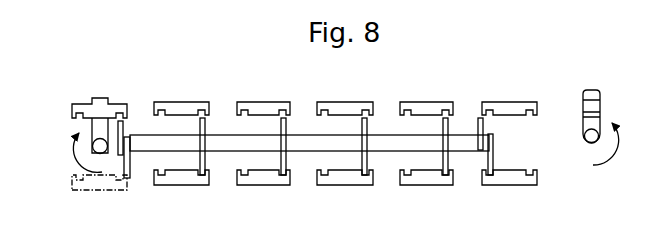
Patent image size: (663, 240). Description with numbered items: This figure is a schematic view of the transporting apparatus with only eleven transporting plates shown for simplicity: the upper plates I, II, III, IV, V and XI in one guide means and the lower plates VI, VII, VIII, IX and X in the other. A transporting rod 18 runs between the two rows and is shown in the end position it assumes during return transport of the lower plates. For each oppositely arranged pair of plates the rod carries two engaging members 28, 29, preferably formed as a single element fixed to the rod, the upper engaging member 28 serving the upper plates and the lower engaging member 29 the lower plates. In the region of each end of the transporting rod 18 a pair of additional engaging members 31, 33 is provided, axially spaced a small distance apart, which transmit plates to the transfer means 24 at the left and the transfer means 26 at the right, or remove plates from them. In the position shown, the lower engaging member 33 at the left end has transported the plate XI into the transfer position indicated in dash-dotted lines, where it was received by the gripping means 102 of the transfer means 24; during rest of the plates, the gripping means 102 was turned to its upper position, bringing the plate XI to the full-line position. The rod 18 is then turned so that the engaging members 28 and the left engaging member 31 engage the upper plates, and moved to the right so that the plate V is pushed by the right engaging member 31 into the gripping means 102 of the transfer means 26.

The transporting rod 18 is at (305, 147).
The transfer means 24 is at (114, 101).
The transfer means 26 is at (578, 106).
The engaging member 28 is at (287, 127).
The engaging member 29 is at (448, 157).
The engaging member 31 is at (123, 128).
The engaging member 33 is at (132, 166).
The gripping means 102 is at (70, 103).
The transporting plate I is at (178, 106).
The transporting plate II is at (256, 106).
The transporting plate III is at (342, 106).
The transporting plate IV is at (418, 105).
The transporting plate V is at (501, 105).
The transporting plate VI is at (512, 183).
The transporting plate VII is at (420, 183).
The transporting plate VIII is at (347, 183).
The transporting plate IX is at (258, 183).
The transporting plate X is at (181, 183).
The transporting plate XI is at (86, 104).